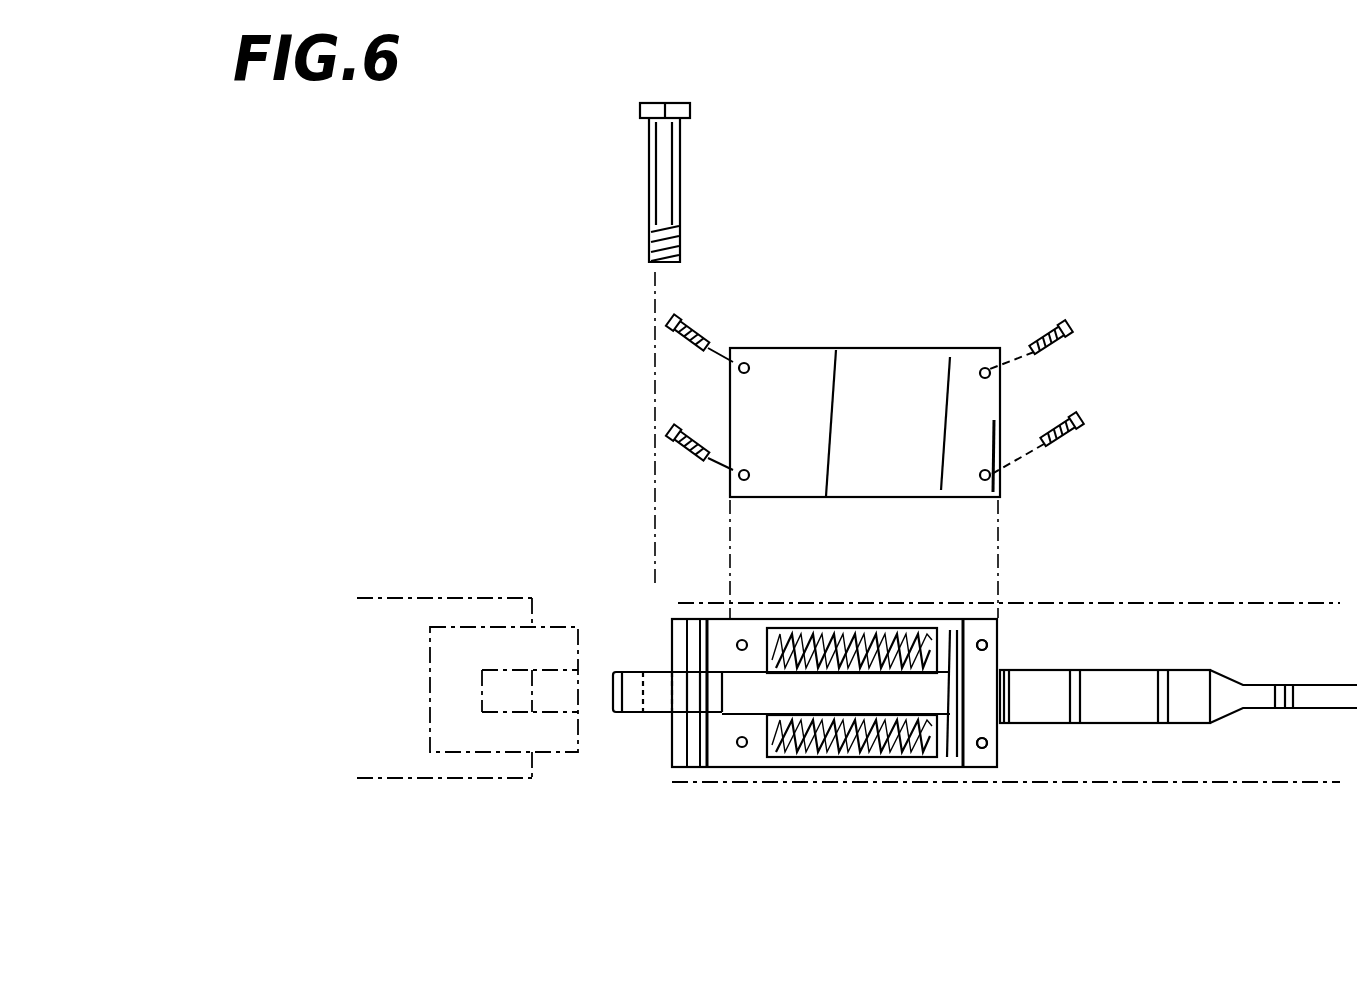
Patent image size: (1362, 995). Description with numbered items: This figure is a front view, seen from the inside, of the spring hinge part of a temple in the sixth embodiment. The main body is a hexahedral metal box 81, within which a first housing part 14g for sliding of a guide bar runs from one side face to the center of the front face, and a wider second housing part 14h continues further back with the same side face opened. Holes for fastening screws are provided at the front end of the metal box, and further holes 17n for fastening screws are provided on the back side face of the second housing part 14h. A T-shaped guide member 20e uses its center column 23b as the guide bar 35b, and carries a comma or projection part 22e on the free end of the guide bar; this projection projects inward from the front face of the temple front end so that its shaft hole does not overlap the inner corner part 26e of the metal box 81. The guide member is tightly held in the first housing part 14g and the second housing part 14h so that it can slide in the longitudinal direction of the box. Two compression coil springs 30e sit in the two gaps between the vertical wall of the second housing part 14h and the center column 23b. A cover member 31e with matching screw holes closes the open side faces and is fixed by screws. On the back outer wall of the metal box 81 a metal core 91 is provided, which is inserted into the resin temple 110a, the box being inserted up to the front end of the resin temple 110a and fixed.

The cover member 31e is at (885, 392).
The resin temple 110a is at (1096, 628).
The inner corner part 26e is at (683, 617).
The first housing part 14g is at (723, 714).
The comma or projection part 22e is at (613, 708).
The guide bar 35b is at (773, 690).
The center column 23b is at (840, 698).
The compression coil springs 30e is at (793, 632).
The second housing part 14h is at (795, 755).
The T-shaped guide member 20e is at (950, 745).
The hexahedral metal box 81 is at (977, 630).
The holes for fastening screws 17n is at (982, 750).
The metal core 91 is at (1098, 703).